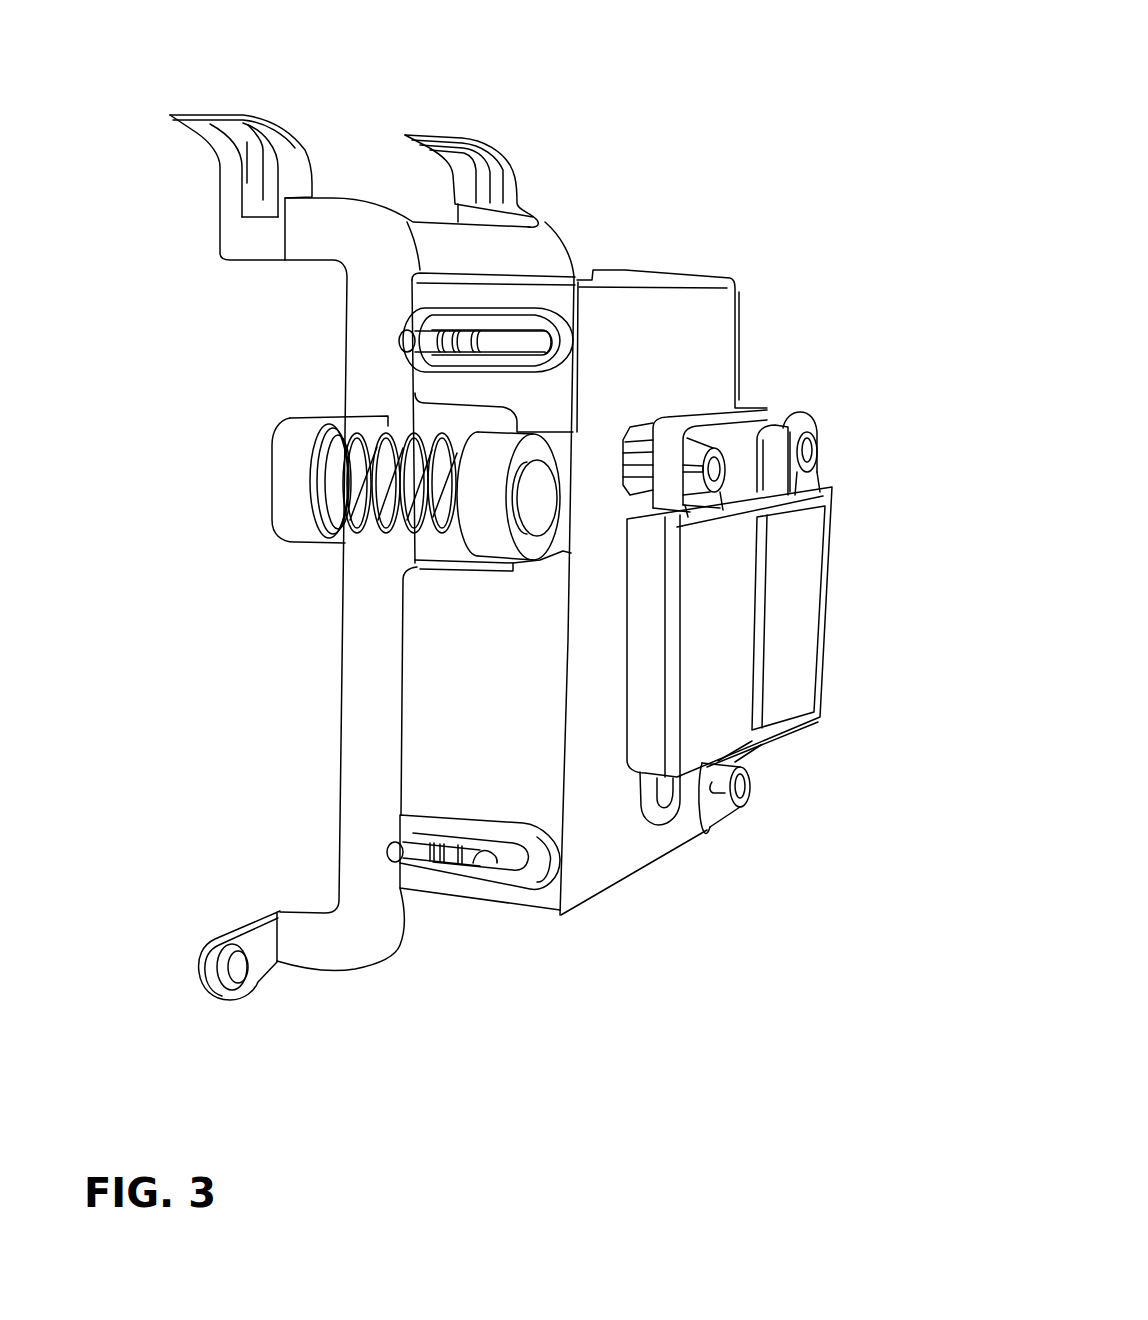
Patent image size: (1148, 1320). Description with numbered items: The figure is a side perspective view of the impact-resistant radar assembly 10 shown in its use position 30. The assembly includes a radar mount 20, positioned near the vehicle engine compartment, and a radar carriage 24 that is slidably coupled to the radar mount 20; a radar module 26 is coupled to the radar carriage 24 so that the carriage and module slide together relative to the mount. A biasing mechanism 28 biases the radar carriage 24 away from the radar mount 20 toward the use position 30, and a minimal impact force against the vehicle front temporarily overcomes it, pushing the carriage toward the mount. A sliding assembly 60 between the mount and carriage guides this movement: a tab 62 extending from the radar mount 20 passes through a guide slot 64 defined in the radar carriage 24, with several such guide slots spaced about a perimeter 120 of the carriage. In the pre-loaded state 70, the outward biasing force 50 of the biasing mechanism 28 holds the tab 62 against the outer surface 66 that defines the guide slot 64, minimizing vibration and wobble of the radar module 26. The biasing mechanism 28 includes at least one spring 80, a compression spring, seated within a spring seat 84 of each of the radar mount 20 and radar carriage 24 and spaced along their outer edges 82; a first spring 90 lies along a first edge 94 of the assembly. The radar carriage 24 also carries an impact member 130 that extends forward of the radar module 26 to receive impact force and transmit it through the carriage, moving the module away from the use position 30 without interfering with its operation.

The impact-resistant radar assembly 10 is at (796, 134).
The radar mount 20 is at (367, 700).
The radar carriage 24 is at (585, 855).
The radar module 26 is at (797, 617).
The biasing mechanism 28 is at (403, 426).
The use position 30 is at (448, 968).
The outward biasing force 50 is at (523, 498).
The sliding assembly 60 is at (520, 302).
The tab 62 is at (420, 337).
The guide slot 64 is at (537, 343).
The outer surface 66 is at (486, 858).
The pre-loaded state 70 is at (273, 534).
The spring 80 is at (370, 482).
The outer edges 82 is at (565, 577).
The spring seat 84 is at (357, 417).
The first spring 90 is at (395, 538).
The first edge 94 is at (560, 727).
The perimeter 120 is at (389, 816).
The impact member 130 is at (780, 410).